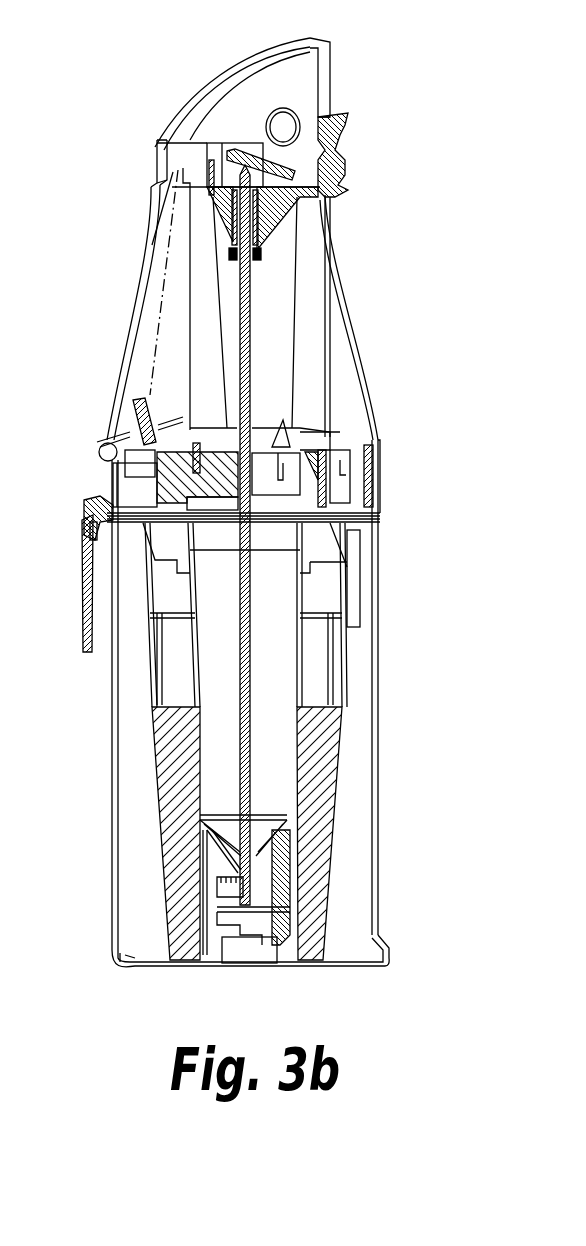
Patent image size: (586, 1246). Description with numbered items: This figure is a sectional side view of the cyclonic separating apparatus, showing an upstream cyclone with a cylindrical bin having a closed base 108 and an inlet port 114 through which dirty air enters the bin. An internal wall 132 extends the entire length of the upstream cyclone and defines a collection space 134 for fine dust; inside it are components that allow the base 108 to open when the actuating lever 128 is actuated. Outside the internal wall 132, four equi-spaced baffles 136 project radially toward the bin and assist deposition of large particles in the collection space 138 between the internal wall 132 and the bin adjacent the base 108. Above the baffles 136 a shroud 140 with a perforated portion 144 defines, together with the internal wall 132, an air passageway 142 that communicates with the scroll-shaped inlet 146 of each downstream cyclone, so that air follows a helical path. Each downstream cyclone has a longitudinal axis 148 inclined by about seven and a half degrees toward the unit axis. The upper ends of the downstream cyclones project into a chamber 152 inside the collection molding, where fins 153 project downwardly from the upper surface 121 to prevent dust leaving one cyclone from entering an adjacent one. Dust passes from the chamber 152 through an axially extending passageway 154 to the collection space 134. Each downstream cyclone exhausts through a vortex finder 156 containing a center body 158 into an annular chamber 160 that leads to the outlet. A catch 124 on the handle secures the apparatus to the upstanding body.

The closed base 108 is at (170, 963).
The inlet port 114 is at (347, 558).
The upper surface 121 is at (227, 140).
The catch 124 is at (320, 107).
The actuating lever 128 is at (287, 110).
The internal wall 132 is at (300, 675).
The collection space 134 is at (267, 812).
The baffles 136 is at (318, 763).
The collection space 138 is at (345, 933).
The shroud 140 is at (342, 580).
The air passageway 142 is at (318, 595).
The perforated portion 144 is at (148, 683).
The inlet 146 is at (173, 463).
The longitudinal axis 148 is at (158, 305).
The chamber 152 is at (202, 157).
The fins 153 is at (190, 162).
The axially extending passageway 154 is at (203, 253).
The vortex finder 156 is at (130, 427).
The center body 158 is at (132, 392).
The annular chamber 160 is at (127, 490).